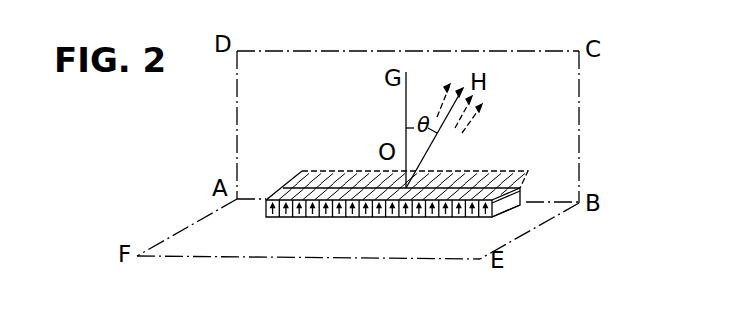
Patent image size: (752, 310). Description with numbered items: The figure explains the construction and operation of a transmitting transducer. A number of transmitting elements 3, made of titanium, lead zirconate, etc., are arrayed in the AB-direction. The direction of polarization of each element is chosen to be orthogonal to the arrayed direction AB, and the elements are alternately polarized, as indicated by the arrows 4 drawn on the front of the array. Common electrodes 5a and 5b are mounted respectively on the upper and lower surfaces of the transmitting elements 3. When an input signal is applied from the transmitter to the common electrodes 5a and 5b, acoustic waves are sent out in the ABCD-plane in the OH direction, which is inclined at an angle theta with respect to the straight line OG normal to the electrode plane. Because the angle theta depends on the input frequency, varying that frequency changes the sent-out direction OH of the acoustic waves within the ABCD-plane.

The transmitting elements 3 is at (500, 212).
The arrows 4 is at (298, 214).
The common electrode 5a is at (512, 189).
The common electrode 5b is at (510, 210).